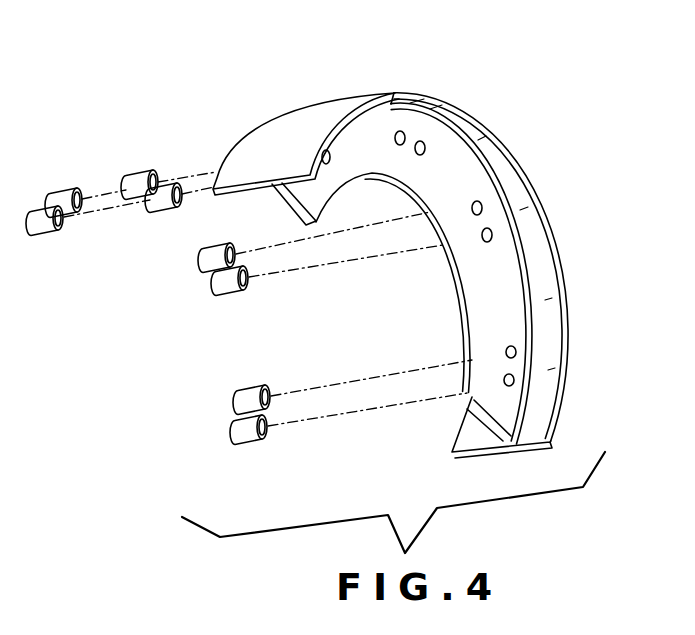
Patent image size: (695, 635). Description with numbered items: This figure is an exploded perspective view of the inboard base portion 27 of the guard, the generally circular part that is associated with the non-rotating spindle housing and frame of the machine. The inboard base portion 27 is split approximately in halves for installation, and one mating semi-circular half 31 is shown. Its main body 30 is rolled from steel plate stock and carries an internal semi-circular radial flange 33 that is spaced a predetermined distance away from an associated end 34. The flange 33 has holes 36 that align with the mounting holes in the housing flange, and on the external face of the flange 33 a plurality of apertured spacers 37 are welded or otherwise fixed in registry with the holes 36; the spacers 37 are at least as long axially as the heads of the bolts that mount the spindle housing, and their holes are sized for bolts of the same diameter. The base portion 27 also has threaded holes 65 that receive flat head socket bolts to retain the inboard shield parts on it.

The inboard base portion 27 is at (438, 84).
The main body 30 is at (473, 119).
The semi-circular half 31 is at (522, 172).
The internal semi-circular radial flange 33 is at (493, 282).
The end 34 is at (453, 430).
The holes 36 is at (517, 351).
The apertured spacers 37 is at (226, 290).
The threaded holes 65 is at (267, 137).